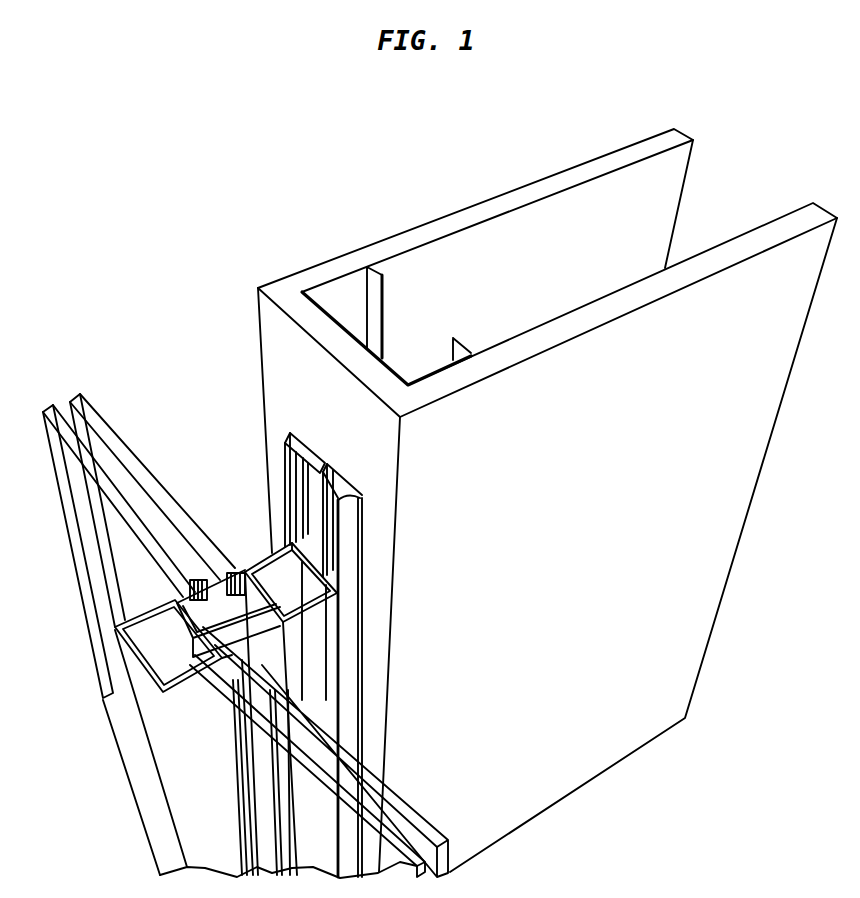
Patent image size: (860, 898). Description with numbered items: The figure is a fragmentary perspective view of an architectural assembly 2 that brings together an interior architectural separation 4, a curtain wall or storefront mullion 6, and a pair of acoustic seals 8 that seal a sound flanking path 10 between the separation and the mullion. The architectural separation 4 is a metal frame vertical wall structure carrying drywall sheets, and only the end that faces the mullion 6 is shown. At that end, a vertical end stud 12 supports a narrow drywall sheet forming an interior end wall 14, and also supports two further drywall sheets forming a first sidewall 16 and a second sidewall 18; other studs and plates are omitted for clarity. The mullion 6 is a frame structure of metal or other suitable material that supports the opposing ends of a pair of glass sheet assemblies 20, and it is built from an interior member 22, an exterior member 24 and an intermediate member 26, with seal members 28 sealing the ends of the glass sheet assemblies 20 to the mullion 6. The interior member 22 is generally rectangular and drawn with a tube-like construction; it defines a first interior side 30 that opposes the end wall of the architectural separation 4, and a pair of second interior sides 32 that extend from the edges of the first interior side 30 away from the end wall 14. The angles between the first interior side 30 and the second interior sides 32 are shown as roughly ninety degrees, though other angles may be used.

The architectural assembly 2 is at (208, 273).
The interior architectural separation 4 is at (347, 306).
The mullion 6 is at (262, 552).
The acoustic seals 8 is at (303, 448).
The sound flanking path 10 is at (392, 652).
The vertical end stud 12 is at (465, 345).
The interior end wall 14 is at (263, 360).
The first sidewall 16 is at (648, 310).
The second sidewall 18 is at (527, 182).
The glass sheet assemblies 20 is at (58, 496).
The interior member 22 is at (288, 588).
The exterior member 24 is at (155, 658).
The intermediate member 26 is at (235, 665).
The seal members 28 is at (230, 572).
The first interior side 30 is at (303, 566).
The second interior sides 32 is at (326, 632).